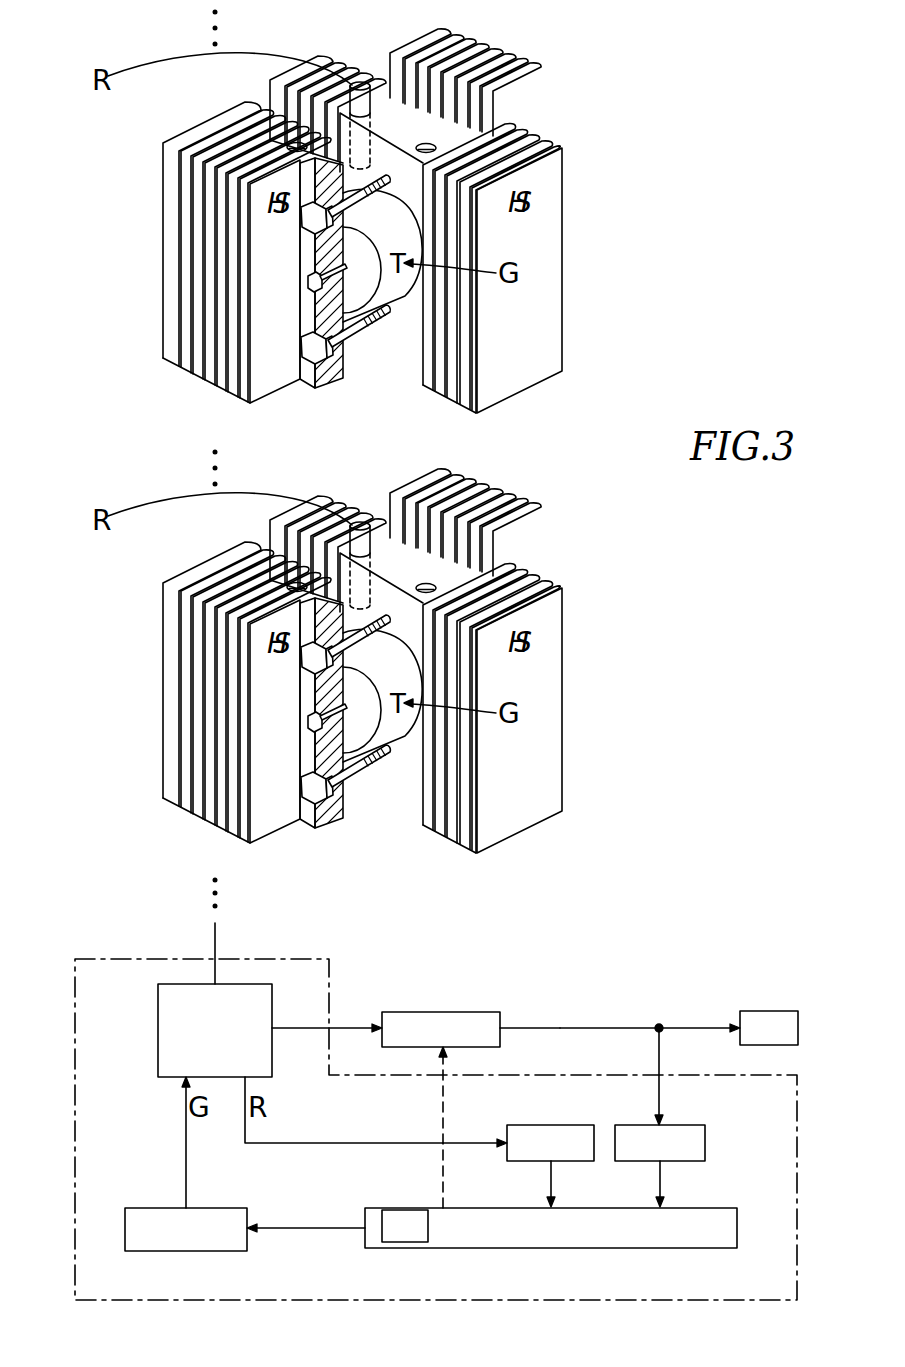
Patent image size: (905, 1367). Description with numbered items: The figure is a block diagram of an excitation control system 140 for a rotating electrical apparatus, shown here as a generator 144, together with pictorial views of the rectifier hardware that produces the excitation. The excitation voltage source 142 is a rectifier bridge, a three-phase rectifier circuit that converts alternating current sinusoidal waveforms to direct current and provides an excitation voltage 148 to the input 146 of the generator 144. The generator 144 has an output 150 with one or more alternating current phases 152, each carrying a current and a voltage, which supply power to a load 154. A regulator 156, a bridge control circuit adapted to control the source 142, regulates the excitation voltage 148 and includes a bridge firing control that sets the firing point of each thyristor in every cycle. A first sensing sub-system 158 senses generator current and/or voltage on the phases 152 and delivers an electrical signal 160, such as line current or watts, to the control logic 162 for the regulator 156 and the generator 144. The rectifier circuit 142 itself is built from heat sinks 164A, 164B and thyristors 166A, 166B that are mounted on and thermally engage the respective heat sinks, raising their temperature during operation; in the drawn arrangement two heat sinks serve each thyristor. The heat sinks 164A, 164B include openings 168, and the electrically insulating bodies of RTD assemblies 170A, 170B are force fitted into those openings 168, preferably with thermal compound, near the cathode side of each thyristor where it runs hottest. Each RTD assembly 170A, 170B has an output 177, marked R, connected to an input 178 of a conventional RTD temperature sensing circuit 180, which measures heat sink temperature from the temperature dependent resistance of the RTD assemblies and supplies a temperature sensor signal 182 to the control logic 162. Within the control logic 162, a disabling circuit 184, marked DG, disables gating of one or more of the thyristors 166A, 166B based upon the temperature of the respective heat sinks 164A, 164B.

The excitation control system 140 is at (108, 958).
The excitation voltage source 142 is at (158, 1029).
The generator 144 is at (438, 1012).
The input 146 is at (380, 1028).
The excitation voltage 148 is at (309, 1028).
The output 150 is at (505, 1028).
The alternating current phases 152 is at (555, 1028).
The load 154 is at (779, 1011).
The regulator 156 is at (148, 1208).
The first sensing sub-system 158 is at (690, 1125).
The electrical signal 160 is at (661, 1184).
The control logic 162 is at (672, 1250).
The heat sink 164A is at (518, 570).
The heat sink 164B is at (518, 130).
The thyristor 166A is at (412, 736).
The thyristor 166B is at (412, 296).
The openings 168 is at (428, 586).
The RTD assembly 170A is at (362, 526).
The RTD assembly 170B is at (362, 86).
The output 177 is at (306, 1143).
The input 178 is at (503, 1142).
The RTD temperature sensing circuit 180 is at (544, 1125).
The temperature sensor signal 182 is at (550, 1184).
The circuit 184 is at (387, 1210).